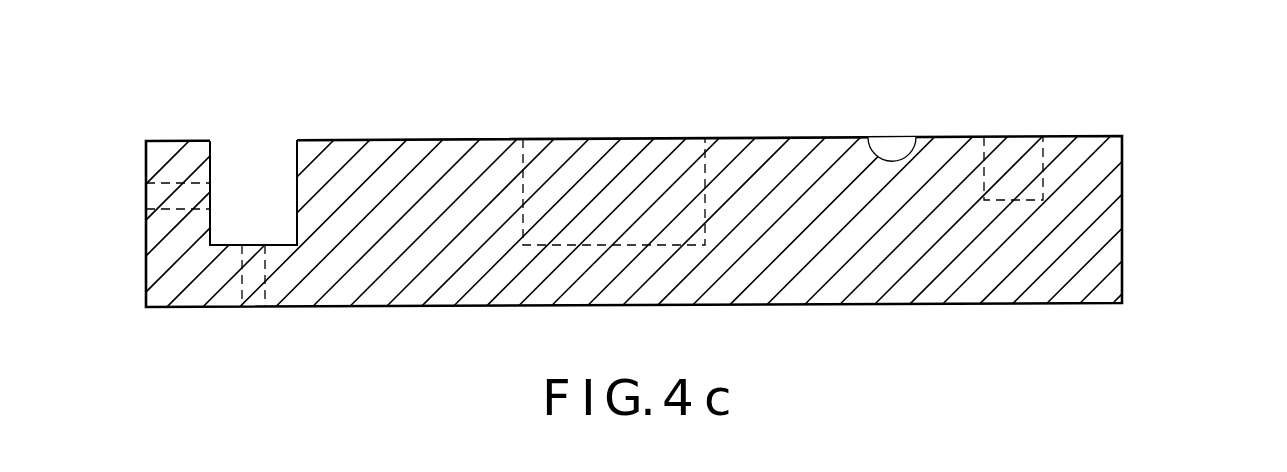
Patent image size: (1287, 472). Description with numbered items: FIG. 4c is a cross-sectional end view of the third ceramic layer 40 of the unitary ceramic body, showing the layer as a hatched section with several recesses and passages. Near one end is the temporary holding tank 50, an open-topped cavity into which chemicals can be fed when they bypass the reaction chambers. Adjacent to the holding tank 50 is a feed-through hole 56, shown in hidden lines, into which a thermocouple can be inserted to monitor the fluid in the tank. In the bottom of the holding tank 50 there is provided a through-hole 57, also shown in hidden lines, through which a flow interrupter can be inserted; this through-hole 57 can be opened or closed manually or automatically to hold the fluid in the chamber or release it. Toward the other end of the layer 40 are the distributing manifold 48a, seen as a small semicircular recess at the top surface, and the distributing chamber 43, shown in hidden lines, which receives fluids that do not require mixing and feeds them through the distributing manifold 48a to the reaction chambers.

The third ceramic layer 40 is at (655, 210).
The distributing chamber 43 is at (1012, 146).
The distributing manifold 48a is at (895, 143).
The temporary holding tank 50 is at (280, 150).
The feed-through hole 56 is at (164, 183).
The through-hole 57 is at (257, 309).